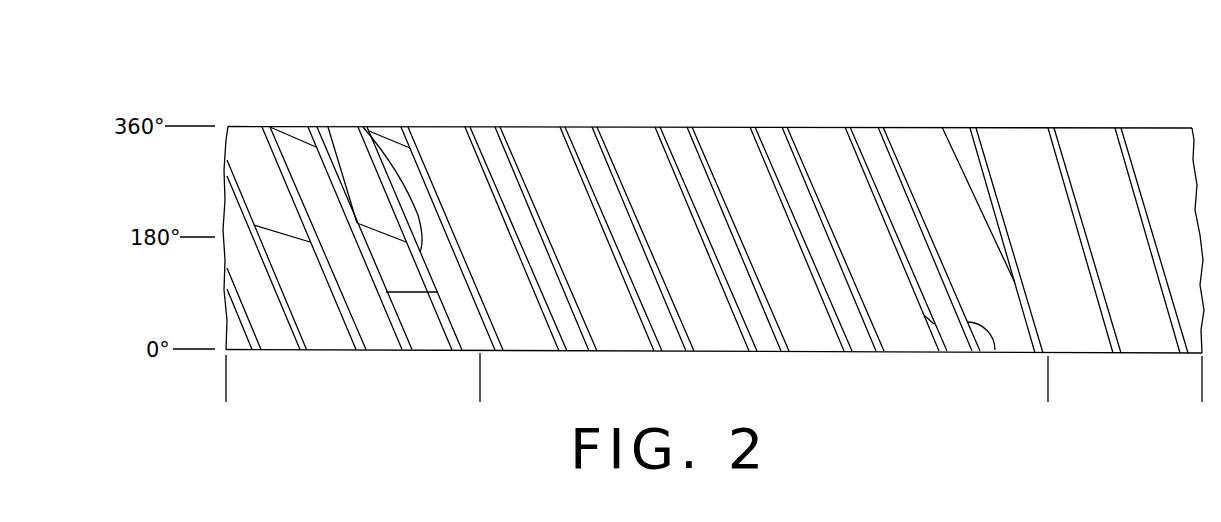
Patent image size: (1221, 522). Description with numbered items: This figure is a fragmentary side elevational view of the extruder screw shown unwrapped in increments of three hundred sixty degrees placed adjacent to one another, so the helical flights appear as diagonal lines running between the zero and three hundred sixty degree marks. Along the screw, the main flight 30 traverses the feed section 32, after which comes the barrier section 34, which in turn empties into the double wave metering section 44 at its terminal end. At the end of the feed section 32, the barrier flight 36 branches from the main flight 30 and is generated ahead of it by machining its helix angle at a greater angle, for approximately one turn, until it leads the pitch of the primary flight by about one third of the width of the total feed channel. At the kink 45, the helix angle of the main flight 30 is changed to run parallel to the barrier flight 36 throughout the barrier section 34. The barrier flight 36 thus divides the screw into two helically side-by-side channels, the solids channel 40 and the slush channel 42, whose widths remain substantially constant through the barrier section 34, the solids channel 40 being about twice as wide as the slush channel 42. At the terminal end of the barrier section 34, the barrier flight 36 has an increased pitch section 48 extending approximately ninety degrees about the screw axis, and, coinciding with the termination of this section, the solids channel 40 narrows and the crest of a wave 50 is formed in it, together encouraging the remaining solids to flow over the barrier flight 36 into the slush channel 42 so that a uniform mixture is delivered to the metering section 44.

The main flight 30 is at (593, 127).
The feed section 32 is at (1202, 391).
The barrier section 34 is at (1048, 391).
The barrier flight 36 is at (358, 127).
The solids channel 40 is at (317, 126).
The slush channel 42 is at (395, 127).
The double wave metering section 44 is at (480, 391).
The kink 45 is at (995, 350).
The increased pitch section 48 is at (378, 127).
The wave 50 is at (328, 127).